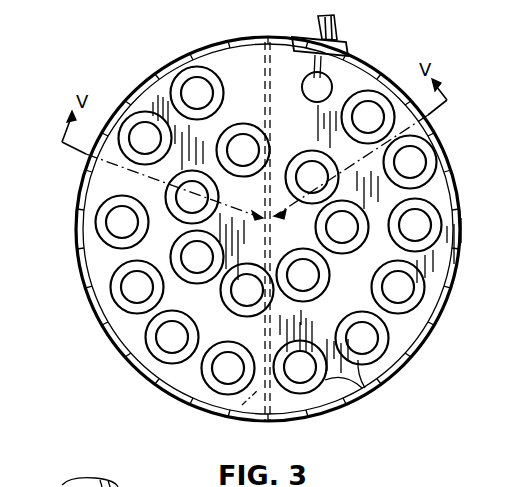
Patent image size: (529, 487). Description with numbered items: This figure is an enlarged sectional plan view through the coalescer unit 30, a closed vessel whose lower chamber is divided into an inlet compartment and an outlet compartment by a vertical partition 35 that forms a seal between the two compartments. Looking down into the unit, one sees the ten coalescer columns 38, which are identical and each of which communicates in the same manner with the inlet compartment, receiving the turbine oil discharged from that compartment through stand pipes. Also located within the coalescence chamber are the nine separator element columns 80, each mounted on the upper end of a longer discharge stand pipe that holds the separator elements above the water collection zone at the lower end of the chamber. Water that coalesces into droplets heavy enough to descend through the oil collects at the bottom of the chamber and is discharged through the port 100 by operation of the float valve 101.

The coalescer unit 30 is at (460, 233).
The vertical partition 35 is at (231, 416).
The coalescer columns 38 is at (111, 287).
The separator element columns 80 is at (365, 388).
The port 100 is at (313, 57).
The float valve 101 is at (338, 23).